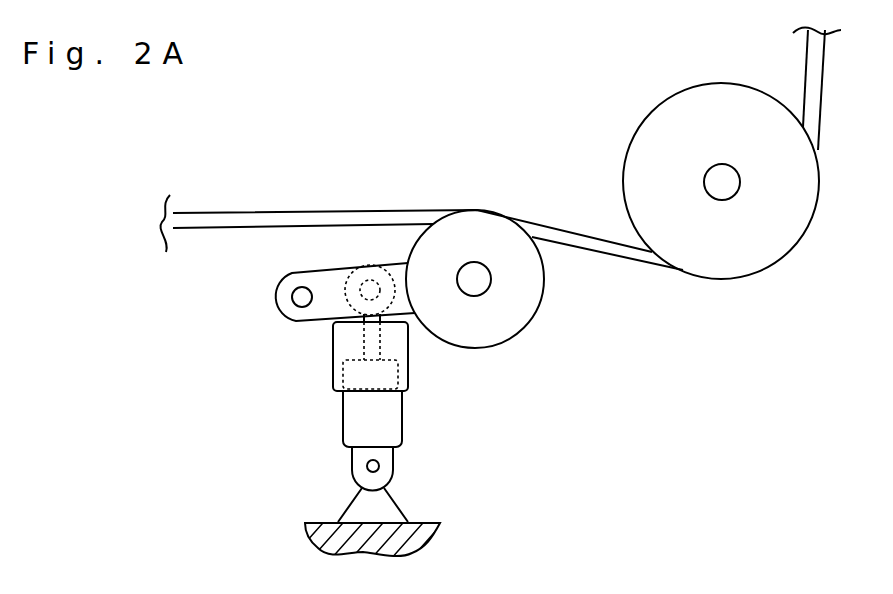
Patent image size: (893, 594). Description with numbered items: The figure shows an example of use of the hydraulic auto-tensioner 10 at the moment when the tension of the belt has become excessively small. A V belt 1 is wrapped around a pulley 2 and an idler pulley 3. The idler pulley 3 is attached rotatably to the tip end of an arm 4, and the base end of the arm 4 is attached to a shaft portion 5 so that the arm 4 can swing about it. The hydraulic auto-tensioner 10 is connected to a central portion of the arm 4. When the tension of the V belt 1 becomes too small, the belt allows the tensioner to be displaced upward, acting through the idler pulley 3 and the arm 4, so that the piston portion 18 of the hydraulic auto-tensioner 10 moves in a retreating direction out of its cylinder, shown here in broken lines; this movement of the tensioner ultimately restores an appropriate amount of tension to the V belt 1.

The V belt 1 is at (241, 221).
The pulley 2 is at (775, 235).
The idler pulley 3 is at (507, 322).
The arm 4 is at (317, 239).
The shaft portion 5 is at (297, 297).
The hydraulic auto-tensioner 10 is at (327, 393).
The piston portion 18 is at (372, 340).